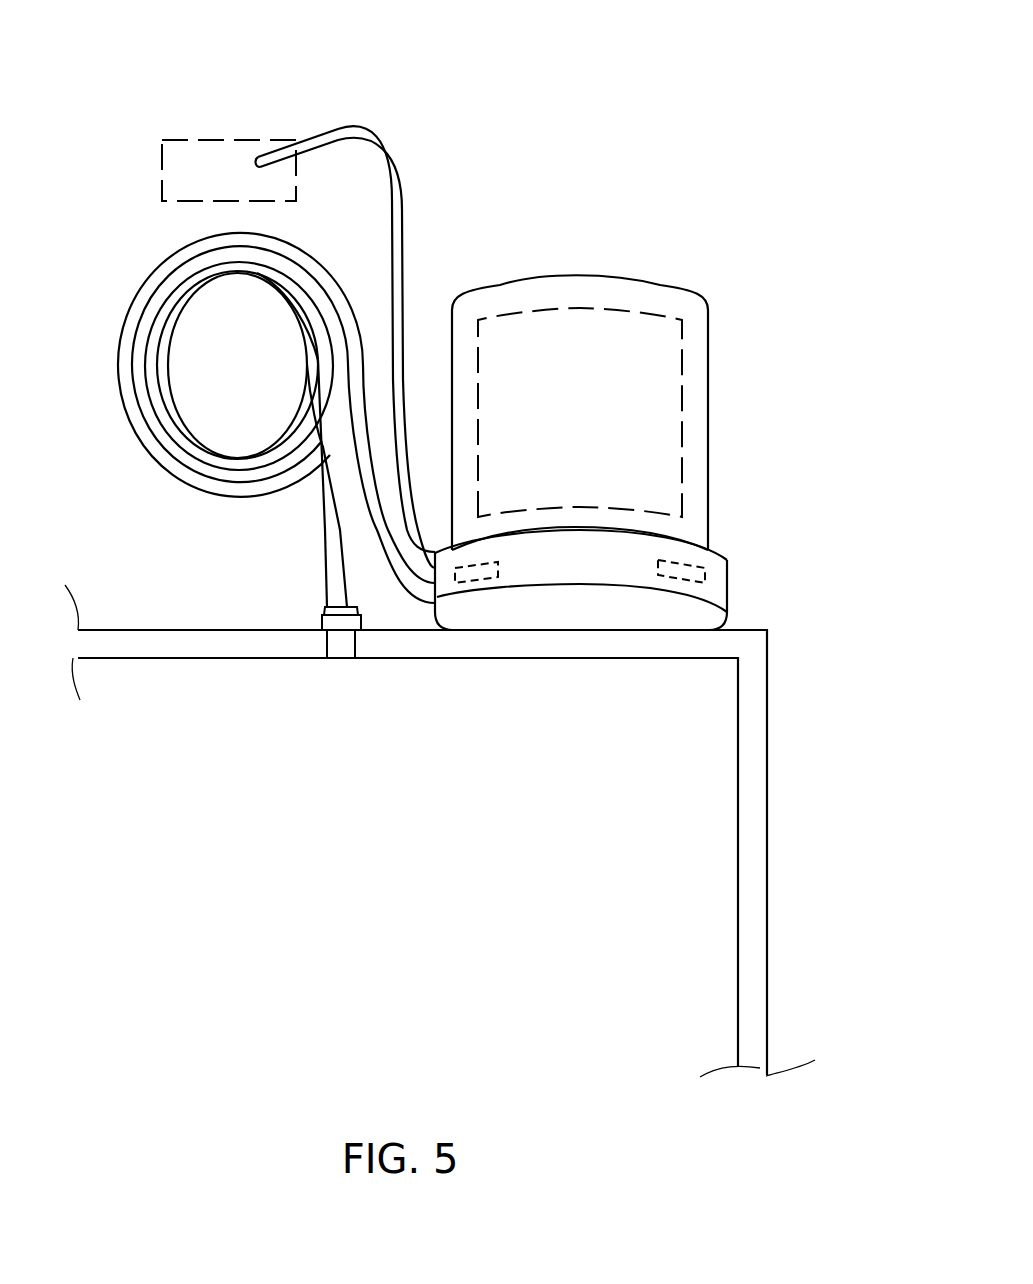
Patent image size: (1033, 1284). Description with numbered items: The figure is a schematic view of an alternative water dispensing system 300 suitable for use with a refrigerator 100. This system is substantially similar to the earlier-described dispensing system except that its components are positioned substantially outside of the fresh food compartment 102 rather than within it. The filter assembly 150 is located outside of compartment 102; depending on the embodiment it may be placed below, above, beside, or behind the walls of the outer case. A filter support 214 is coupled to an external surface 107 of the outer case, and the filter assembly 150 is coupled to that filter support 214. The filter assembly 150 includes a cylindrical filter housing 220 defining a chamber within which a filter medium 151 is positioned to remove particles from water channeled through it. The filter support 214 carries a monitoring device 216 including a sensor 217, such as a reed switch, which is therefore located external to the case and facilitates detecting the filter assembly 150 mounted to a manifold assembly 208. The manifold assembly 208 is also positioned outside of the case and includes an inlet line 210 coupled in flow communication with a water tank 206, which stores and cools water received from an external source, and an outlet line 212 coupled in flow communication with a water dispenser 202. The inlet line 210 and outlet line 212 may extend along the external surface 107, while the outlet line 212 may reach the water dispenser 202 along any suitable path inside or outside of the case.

The refrigerator 100 is at (805, 887).
The fresh food compartment 102 is at (393, 968).
The external surface 107 is at (767, 742).
The filter assembly 150 is at (613, 436).
The filter medium 151 is at (667, 372).
The water dispenser 202 is at (340, 643).
The water tank 206 is at (162, 168).
The manifold assembly 208 is at (181, 516).
The inlet line 210 is at (402, 237).
The outlet line 212 is at (117, 373).
The filter support 214 is at (565, 568).
The monitoring device 216 is at (668, 575).
The sensor 217 is at (472, 580).
The filter housing 220 is at (710, 452).
The water dispensing system 300 is at (615, 85).